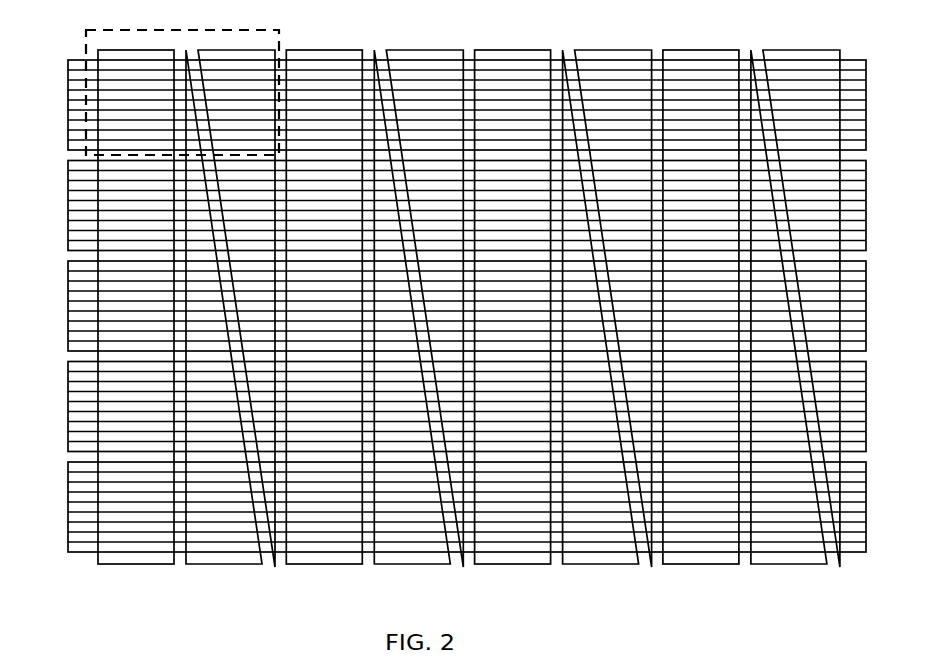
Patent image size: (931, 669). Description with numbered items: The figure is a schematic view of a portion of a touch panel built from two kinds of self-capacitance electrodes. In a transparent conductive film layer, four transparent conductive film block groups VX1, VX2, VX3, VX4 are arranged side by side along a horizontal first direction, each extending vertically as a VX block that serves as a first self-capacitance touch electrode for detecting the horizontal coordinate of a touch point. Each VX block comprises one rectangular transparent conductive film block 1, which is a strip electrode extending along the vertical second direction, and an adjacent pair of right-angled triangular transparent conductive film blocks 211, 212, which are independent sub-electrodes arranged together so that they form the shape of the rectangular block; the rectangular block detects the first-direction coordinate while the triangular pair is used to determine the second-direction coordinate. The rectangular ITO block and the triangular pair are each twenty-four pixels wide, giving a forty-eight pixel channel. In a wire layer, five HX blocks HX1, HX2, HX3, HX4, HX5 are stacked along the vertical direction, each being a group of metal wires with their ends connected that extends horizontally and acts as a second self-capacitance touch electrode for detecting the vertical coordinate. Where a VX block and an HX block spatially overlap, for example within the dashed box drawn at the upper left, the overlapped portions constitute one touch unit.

The rectangular transparent conductive film block 1 is at (112, 563).
The right-angled triangular transparent conductive film block 211 is at (235, 563).
The right-angled triangular transparent conductive film block 212 is at (275, 567).
The HX block HX1 is at (435, 105).
The HX block HX2 is at (435, 206).
The HX block HX3 is at (435, 306).
The HX block HX4 is at (439, 407).
The HX block HX5 is at (439, 507).
The VX block VX1 is at (194, 334).
The VX block VX2 is at (374, 332).
The VX block VX3 is at (563, 327).
The VX block VX4 is at (751, 324).